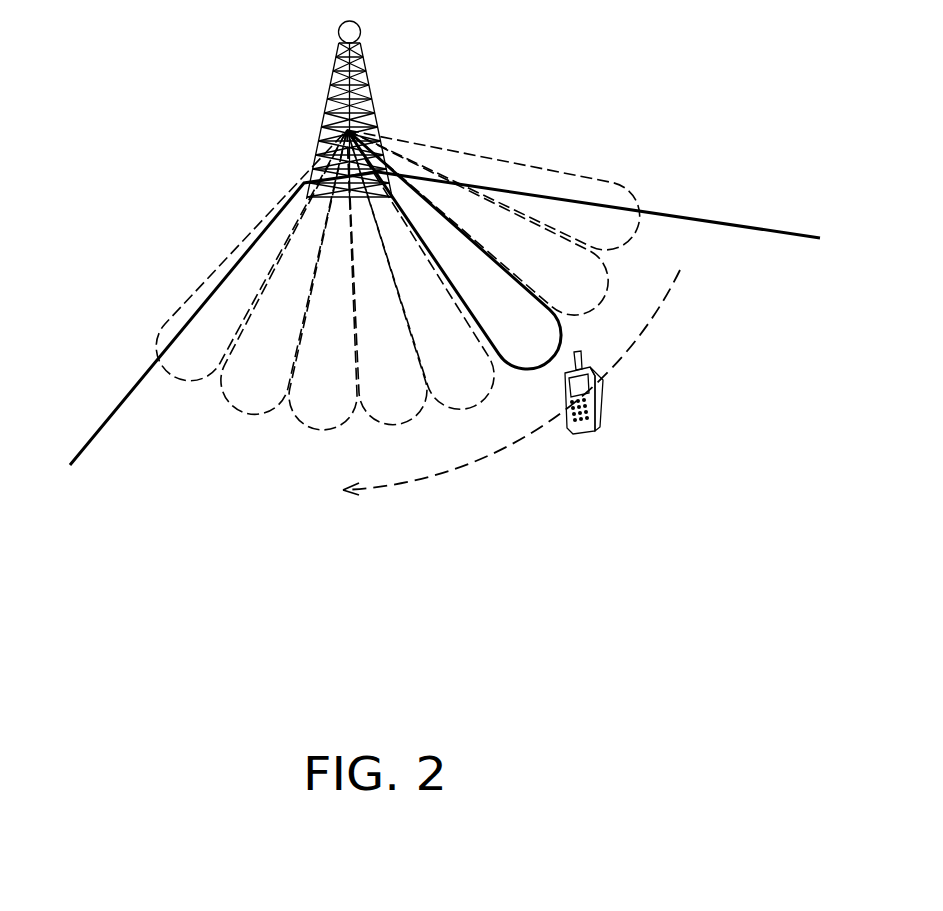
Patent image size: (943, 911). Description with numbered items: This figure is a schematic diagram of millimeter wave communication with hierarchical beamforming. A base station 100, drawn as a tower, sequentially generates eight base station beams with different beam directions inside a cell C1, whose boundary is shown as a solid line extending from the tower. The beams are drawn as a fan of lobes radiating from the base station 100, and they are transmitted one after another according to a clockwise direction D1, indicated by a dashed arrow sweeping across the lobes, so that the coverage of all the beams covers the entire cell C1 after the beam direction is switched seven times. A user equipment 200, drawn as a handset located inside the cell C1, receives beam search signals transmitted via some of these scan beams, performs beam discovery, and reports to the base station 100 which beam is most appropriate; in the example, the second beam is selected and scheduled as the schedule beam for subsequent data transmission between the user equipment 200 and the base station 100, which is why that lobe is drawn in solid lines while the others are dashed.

The base station 100 is at (364, 82).
The user equipment 200 is at (606, 422).
The cell C1 is at (683, 217).
The clockwise direction D1 is at (650, 318).